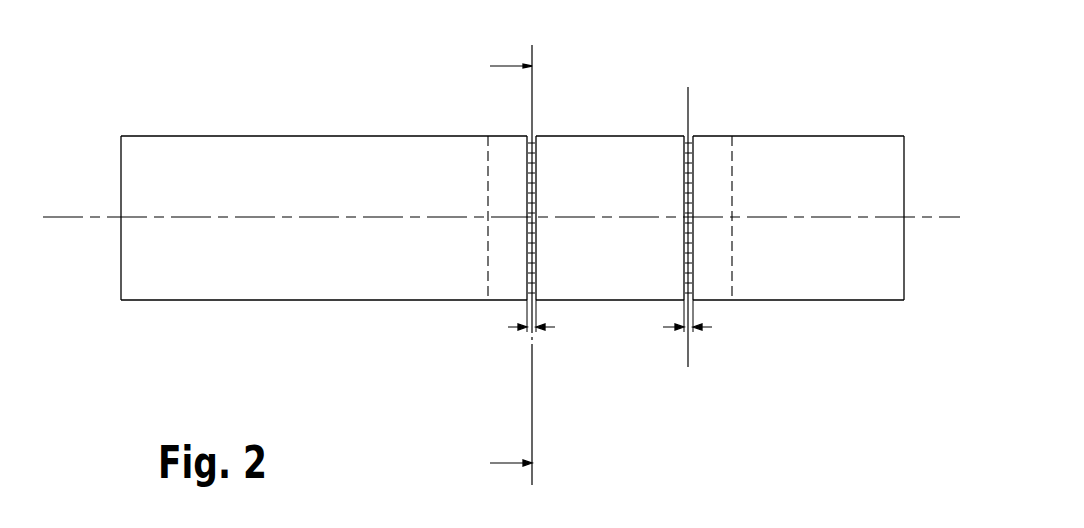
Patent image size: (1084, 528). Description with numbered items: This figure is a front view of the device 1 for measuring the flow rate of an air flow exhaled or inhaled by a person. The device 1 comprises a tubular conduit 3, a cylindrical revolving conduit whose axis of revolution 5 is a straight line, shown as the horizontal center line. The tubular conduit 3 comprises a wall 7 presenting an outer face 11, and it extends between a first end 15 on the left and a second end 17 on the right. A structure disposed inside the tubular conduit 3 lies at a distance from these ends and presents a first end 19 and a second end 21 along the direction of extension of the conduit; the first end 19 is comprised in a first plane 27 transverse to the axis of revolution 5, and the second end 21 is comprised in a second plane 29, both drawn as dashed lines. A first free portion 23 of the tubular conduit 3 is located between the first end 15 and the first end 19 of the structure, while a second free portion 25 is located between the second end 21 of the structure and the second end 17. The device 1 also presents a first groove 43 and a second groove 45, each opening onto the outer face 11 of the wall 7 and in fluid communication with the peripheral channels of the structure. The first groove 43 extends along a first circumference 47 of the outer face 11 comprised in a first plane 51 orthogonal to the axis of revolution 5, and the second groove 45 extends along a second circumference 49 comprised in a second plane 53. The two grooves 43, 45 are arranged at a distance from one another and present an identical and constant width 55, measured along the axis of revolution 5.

The device 1 is at (765, 110).
The tubular conduit 3 is at (501, 261).
The axis of revolution 5 is at (248, 236).
The wall 7 is at (501, 261).
The outer face 11 is at (338, 276).
The first end 15 is at (104, 280).
The second end 17 is at (922, 283).
The first end 19 is at (462, 259).
The second end 21 is at (764, 263).
The first free portion 23 is at (369, 158).
The second free portion 25 is at (851, 288).
The first plane 27 is at (462, 264).
The second plane 29 is at (747, 294).
The first groove 43 is at (565, 170).
The second groove 45 is at (712, 170).
The first circumference 47 is at (545, 130).
The second circumference 49 is at (700, 130).
The first plane 51 is at (505, 418).
The second plane 53 is at (698, 359).
The width 55 is at (558, 345).